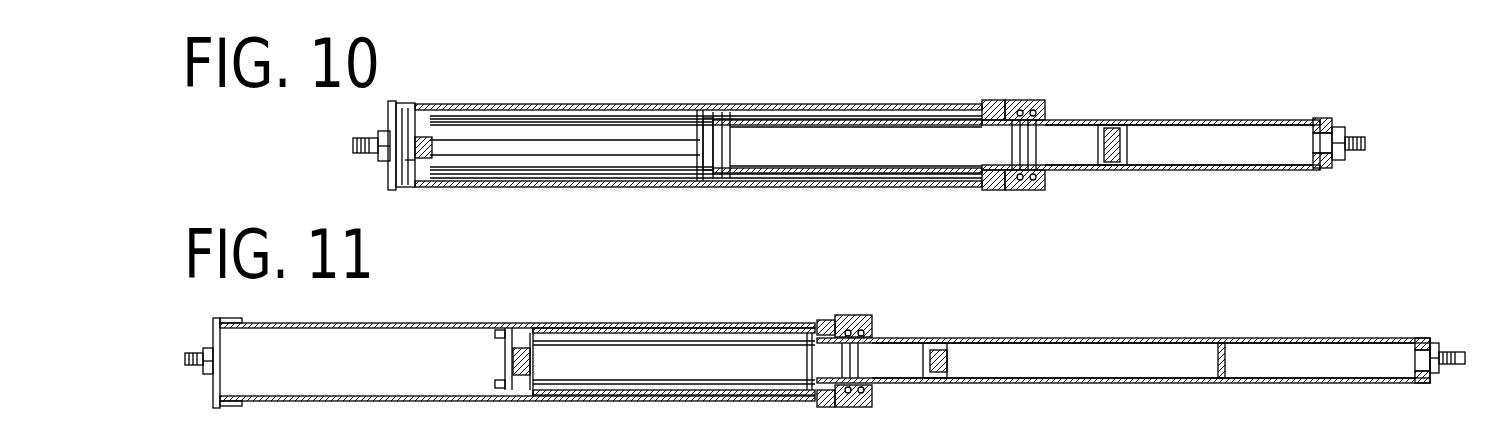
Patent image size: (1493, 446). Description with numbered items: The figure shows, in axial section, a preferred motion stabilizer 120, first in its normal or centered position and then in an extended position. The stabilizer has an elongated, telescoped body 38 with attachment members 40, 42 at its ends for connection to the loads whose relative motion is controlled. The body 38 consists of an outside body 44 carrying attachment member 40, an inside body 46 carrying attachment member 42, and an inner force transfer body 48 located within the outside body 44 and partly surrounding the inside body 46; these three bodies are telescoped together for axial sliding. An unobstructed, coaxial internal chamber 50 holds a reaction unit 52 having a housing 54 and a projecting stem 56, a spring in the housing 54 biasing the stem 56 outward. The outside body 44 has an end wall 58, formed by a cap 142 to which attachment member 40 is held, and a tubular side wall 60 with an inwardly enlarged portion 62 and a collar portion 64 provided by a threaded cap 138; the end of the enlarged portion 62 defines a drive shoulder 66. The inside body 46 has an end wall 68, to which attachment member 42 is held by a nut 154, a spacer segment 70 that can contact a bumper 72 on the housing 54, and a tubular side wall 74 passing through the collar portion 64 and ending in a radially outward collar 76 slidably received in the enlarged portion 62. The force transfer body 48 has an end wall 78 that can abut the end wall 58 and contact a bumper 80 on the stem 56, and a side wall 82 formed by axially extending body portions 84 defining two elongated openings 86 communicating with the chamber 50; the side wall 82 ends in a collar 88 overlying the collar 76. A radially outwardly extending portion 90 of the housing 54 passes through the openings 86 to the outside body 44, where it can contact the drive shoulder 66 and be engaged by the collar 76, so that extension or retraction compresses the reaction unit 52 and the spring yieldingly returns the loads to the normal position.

In FIG. 10, the telescoped body 38 is at (560, 170).
In FIG. 11, the telescoped body 38 is at (680, 397).
In FIG. 10, the attachment member 40 is at (353, 145).
In FIG. 11, the attachment member 40 is at (200, 365).
In FIG. 10, the attachment member 42 is at (1365, 143).
In FIG. 11, the attachment member 42 is at (1455, 355).
In FIG. 10, the outside body 44 is at (540, 104).
In FIG. 11, the outside body 44 is at (400, 323).
In FIG. 10, the inside body 46 is at (1170, 120).
In FIG. 11, the inside body 46 is at (1090, 338).
In FIG. 10, the inner force transfer body 48 is at (625, 112).
In FIG. 11, the inner force transfer body 48 is at (648, 333).
In FIG. 10, the internal chamber 50 is at (800, 165).
In FIG. 11, the internal chamber 50 is at (760, 380).
In FIG. 10, the reaction unit 52 is at (870, 130).
In FIG. 11, the reaction unit 52 is at (720, 360).
In FIG. 10, the housing 54 is at (880, 175).
In FIG. 11, the housing 54 is at (585, 382).
In FIG. 10, the stem 56 is at (645, 150).
In FIG. 10, the end wall 58 is at (388, 120).
In FIG. 11, the end wall 58 is at (213, 330).
In FIG. 10, the tubular side wall 60 is at (470, 185).
In FIG. 11, the tubular side wall 60 is at (400, 398).
In FIG. 10, the inwardly enlarged portion 62 is at (780, 122).
In FIG. 11, the inwardly enlarged portion 62 is at (583, 330).
In FIG. 10, the collar portion 64 is at (1045, 105).
In FIG. 11, the collar portion 64 is at (872, 325).
In FIG. 10, the drive shoulder 66 is at (697, 112).
In FIG. 11, the drive shoulder 66 is at (533, 330).
In FIG. 10, the end wall 68 is at (1325, 118).
In FIG. 11, the end wall 68 is at (1425, 335).
In FIG. 10, the spacer segment 70 is at (1220, 135).
In FIG. 11, the spacer segment 70 is at (1310, 350).
In FIG. 10, the bumper 72 is at (1115, 150).
In FIG. 11, the bumper 72 is at (950, 358).
In FIG. 10, the tubular side wall 74 is at (1070, 170).
In FIG. 11, the tubular side wall 74 is at (1100, 383).
In FIG. 10, the collar 76 is at (735, 182).
In FIG. 11, the collar 76 is at (810, 335).
In FIG. 10, the end wall 78 is at (420, 160).
In FIG. 11, the end wall 78 is at (508, 360).
In FIG. 10, the bumper 80 is at (428, 140).
In FIG. 11, the bumper 80 is at (520, 345).
In FIG. 10, the side wall 82 is at (505, 181).
In FIG. 11, the side wall 82 is at (735, 390).
In FIG. 10, the body portions 84 is at (590, 106).
In FIG. 11, the body portions 84 is at (690, 336).
In FIG. 10, the openings 86 is at (497, 107).
In FIG. 11, the openings 86 is at (612, 335).
In FIG. 10, the collar 88 is at (720, 120).
In FIG. 11, the collar 88 is at (845, 318).
In FIG. 10, the radially outwardly extending portion 90 is at (705, 178).
In FIG. 11, the radially outwardly extending portion 90 is at (515, 385).
In FIG. 10, the motion stabilizer 120 is at (1146, 61).
In FIG. 10, the cap 138 is at (990, 100).
In FIG. 11, the cap 138 is at (870, 400).
In FIG. 10, the cap 142 is at (410, 101).
In FIG. 11, the cap 142 is at (232, 318).
In FIG. 10, the nut 154 is at (1340, 160).
In FIG. 11, the nut 154 is at (1440, 375).